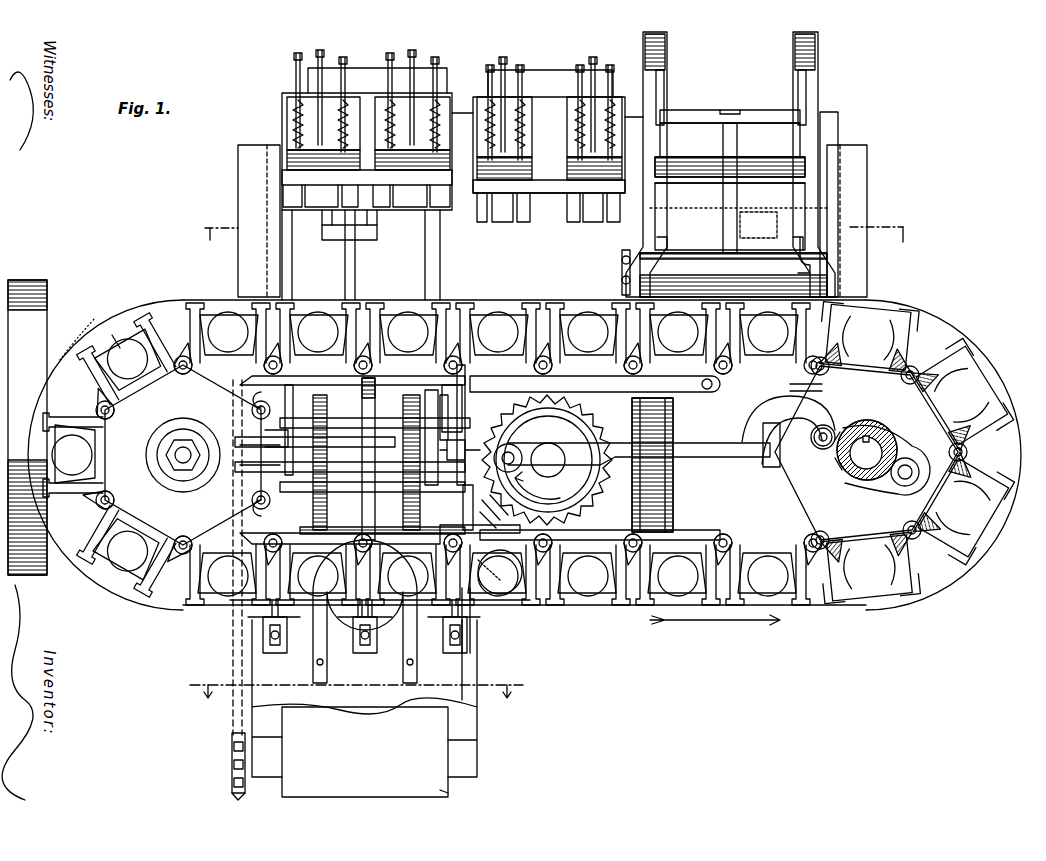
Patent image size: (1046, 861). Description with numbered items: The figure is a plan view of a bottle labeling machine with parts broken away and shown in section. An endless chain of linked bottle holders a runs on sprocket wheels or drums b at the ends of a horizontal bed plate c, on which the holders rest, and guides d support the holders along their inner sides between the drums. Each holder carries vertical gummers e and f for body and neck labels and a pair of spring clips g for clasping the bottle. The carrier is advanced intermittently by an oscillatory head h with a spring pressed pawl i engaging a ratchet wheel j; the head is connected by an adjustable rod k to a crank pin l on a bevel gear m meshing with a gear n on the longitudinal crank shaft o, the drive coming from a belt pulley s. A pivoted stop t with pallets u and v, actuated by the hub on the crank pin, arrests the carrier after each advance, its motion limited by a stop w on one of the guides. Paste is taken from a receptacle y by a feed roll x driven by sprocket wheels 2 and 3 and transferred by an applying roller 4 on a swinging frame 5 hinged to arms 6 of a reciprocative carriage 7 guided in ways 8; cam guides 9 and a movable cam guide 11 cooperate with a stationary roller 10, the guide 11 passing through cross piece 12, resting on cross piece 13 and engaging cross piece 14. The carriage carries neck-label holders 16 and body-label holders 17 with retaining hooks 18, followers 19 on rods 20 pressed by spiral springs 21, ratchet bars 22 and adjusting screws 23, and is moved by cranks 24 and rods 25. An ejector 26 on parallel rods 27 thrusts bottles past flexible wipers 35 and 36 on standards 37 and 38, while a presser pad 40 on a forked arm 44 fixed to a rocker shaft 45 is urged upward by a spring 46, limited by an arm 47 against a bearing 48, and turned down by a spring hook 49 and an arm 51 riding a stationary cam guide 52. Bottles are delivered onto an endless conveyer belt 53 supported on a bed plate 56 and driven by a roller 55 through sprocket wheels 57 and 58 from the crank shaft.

The sprocket wheel 2 is at (620, 280).
The sprocket wheel 3 is at (628, 490).
The paste delivering and applying roller 4 is at (733, 275).
The vertically swinging frame 5 is at (805, 201).
The rearwardly extending arms 6 is at (668, 64).
The reciprocative carriage 7 is at (856, 114).
The parallel ways 8 is at (552, 221).
The cam guides 9 is at (664, 80).
The stationary roller 10 is at (760, 157).
The cam guide 11 is at (723, 201).
The cross piece 12 is at (730, 240).
The cross piece 13 is at (730, 197).
The cross piece 14 is at (752, 110).
The neck-label holders 16 is at (535, 138).
The body-label holders 17 is at (372, 100).
The label retaining hooks 18 is at (425, 210).
The follower 19 is at (453, 177).
The parallel rods 20 is at (300, 76).
The spiral springs 21 is at (296, 122).
The ratchet bar 22 is at (298, 62).
The screws 23 is at (325, 62).
The cranks 24 is at (378, 410).
The rods 25 is at (360, 272).
The reciprocative ejector 26 is at (370, 508).
The parallel rods 27 is at (440, 268).
The flexible wipers 35 is at (364, 618).
The flexible wipers 36 is at (290, 640).
The standards 37 is at (470, 628).
The standards 38 is at (355, 622).
The presser pad 40 is at (400, 672).
The forked and elbow-shaped arm 44 is at (382, 541).
The horizontal rocker shaft 45 is at (480, 534).
The spring 46 is at (360, 525).
The arm 47 is at (463, 508).
The horizontal bearing 48 is at (395, 528).
The spring hook 49 is at (362, 478).
The arm 51 is at (500, 572).
The stationary cam guide 52 is at (494, 575).
The endless conveyer belt 53 is at (365, 752).
The roller 55 is at (448, 793).
The horizontal bed plate 56 is at (285, 714).
The sprocket wheel 57 is at (230, 752).
The sprocket wheel 58 is at (238, 428).
The bottle holders a is at (125, 367).
The sprocket wheels or drums b is at (183, 455).
The horizontal bed plate c is at (78, 471).
The guides d is at (282, 386).
The gummers e is at (92, 328).
The gummers f is at (119, 336).
The spring clips g is at (889, 404).
The oscillatory head h is at (855, 425).
The spring pressed pawl i is at (900, 450).
The ratchet wheel j is at (852, 466).
The adjustable rod k is at (787, 439).
The crank pin l is at (547, 460).
The bevel gear m is at (540, 471).
The bevel gear n is at (495, 515).
The longitudinal crank shaft o is at (469, 460).
The belt pulley s is at (27, 427).
The stop t is at (595, 376).
The pallet u is at (514, 446).
The pallet v is at (639, 441).
The stop w is at (460, 427).
The rotary feed roll x is at (815, 264).
The paste receptacle y is at (740, 216).